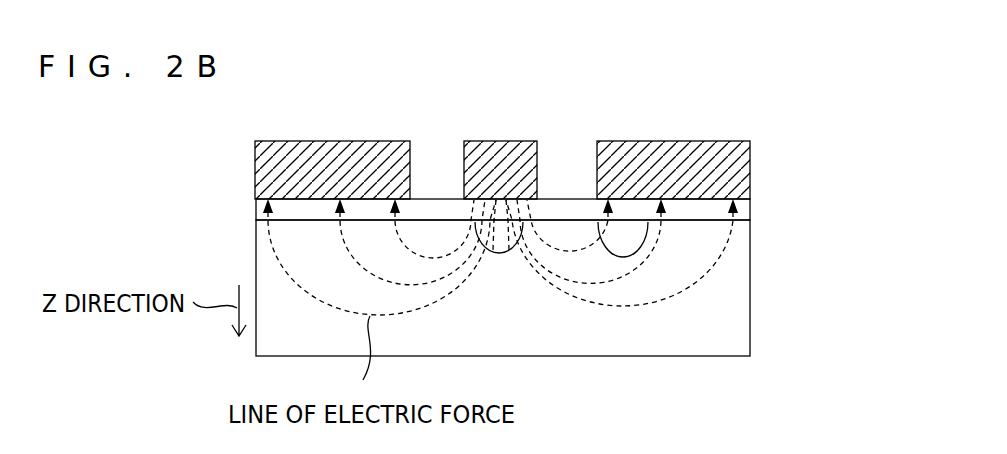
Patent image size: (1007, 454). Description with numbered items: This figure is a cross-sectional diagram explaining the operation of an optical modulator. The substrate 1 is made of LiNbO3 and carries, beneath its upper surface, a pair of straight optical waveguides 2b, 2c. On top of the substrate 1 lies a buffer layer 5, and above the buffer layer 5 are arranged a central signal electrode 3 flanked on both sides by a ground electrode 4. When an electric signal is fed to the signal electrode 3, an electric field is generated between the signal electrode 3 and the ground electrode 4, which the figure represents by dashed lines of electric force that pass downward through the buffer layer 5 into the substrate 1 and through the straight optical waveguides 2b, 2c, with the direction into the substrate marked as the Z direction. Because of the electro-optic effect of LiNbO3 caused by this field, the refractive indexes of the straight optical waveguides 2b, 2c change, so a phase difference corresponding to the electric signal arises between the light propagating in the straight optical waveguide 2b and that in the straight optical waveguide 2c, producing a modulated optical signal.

The substrate 1 is at (743, 301).
The buffer layer 5 is at (743, 211).
The ground electrode 4 is at (332, 141).
The signal electrode 3 is at (500, 141).
The straight optical waveguide 2b is at (500, 245).
The straight optical waveguide 2c is at (625, 243).